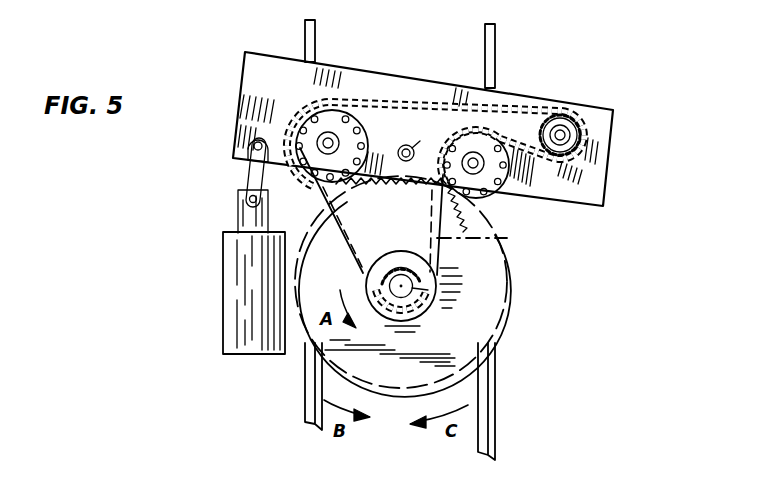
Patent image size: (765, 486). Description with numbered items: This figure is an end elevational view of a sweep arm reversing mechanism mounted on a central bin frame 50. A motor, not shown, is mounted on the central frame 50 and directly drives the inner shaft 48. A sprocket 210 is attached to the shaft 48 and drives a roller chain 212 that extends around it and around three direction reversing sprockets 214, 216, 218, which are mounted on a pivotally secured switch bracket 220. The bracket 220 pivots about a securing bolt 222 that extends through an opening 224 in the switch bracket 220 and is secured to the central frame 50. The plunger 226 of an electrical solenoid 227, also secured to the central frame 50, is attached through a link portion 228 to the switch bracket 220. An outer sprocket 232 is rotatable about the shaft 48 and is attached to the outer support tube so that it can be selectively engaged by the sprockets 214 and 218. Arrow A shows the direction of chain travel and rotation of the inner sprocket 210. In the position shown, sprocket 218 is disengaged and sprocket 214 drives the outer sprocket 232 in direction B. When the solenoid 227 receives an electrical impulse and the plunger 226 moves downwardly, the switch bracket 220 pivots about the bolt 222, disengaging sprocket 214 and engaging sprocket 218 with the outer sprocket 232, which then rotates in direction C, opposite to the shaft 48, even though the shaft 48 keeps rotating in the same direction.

The central frame 50 is at (496, 42).
The inner shaft 48 is at (426, 292).
The sprocket 210 is at (396, 262).
The roller chain 212 is at (495, 236).
The direction reversing sprocket 214 is at (498, 200).
The direction reversing sprocket 216 is at (582, 136).
The direction reversing sprocket 218 is at (334, 118).
The switch bracket 220 is at (298, 89).
The securing bolt 222 is at (398, 153).
The opening 224 is at (413, 139).
The plunger 226 is at (238, 210).
The electrical solenoid 227 is at (223, 250).
The link portion 228 is at (247, 175).
The outer sprocket 232 is at (480, 282).